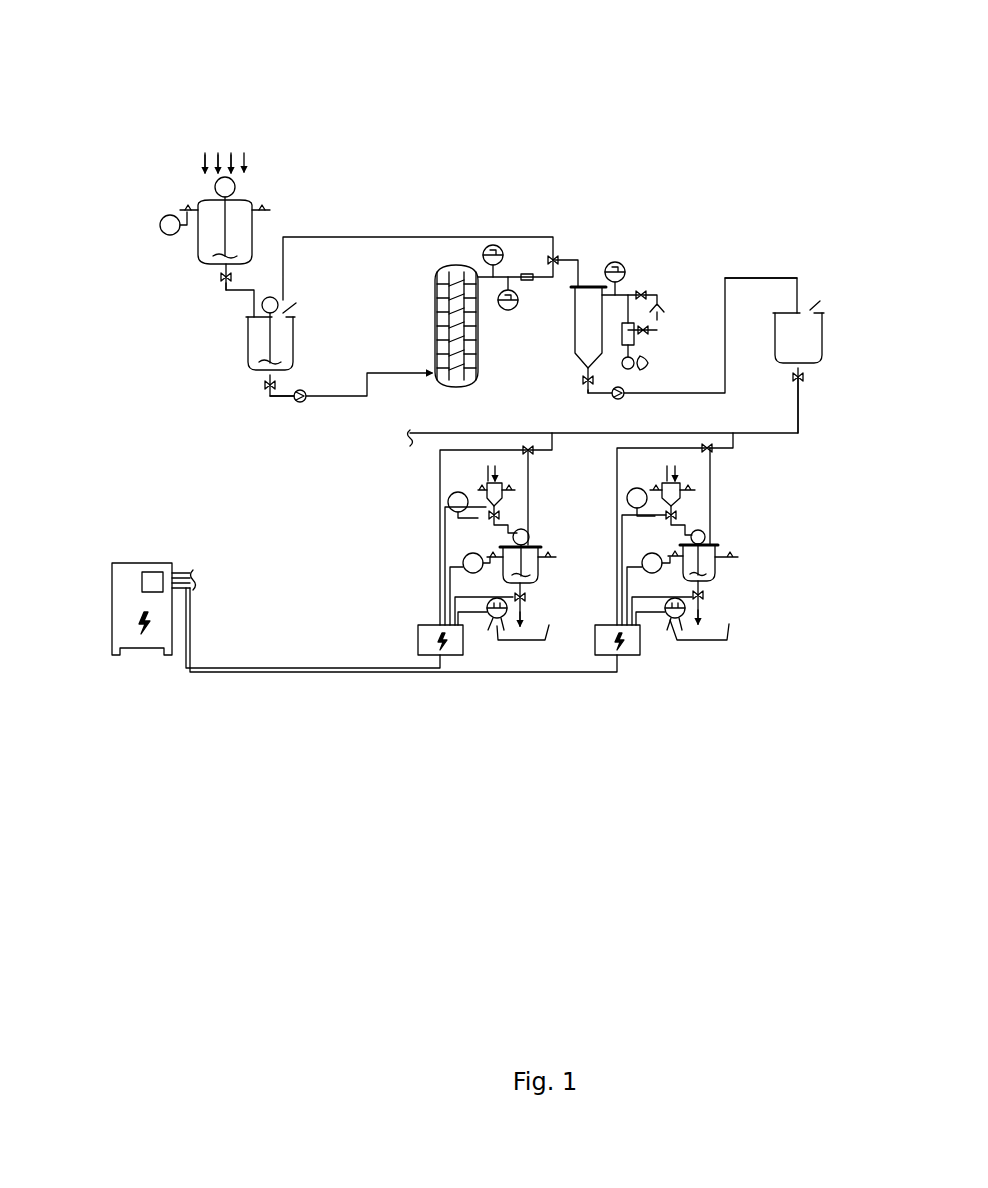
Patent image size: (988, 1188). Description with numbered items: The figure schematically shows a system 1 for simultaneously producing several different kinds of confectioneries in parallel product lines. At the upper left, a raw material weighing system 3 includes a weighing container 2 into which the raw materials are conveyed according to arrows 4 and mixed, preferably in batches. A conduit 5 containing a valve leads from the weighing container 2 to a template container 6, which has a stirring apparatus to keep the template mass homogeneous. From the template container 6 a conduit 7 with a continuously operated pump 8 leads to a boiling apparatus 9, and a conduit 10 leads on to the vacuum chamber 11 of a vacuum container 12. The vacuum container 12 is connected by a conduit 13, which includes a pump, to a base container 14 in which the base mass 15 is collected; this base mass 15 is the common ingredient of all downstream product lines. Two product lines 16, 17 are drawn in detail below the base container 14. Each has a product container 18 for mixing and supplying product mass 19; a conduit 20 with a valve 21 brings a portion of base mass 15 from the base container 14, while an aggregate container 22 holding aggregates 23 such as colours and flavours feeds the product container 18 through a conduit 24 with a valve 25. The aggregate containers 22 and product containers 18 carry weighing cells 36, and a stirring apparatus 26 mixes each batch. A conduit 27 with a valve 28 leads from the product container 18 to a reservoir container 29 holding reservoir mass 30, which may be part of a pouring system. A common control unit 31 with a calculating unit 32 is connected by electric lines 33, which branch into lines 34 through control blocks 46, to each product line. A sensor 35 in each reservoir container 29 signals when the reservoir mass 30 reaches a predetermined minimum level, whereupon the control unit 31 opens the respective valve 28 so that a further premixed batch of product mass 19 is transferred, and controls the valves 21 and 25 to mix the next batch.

The system 1 is at (712, 195).
The weighing container 2 is at (197, 242).
The raw material weighing system 3 is at (176, 203).
The arrows 4 is at (242, 158).
The conduit 5 is at (228, 285).
The template container 6 is at (246, 343).
The conduit 7 is at (285, 396).
The pump 8 is at (298, 400).
The boiling apparatus 9 is at (426, 298).
The conduit 10 is at (573, 260).
The vacuum chamber 11 is at (587, 293).
The vacuum container 12 is at (633, 259).
The conduit 13 is at (768, 278).
The base container 14 is at (823, 347).
The base mass 15 is at (805, 335).
The product line 16 is at (776, 542).
The product line 17 is at (544, 525).
The product container 18 is at (541, 577).
The product mass 19 is at (719, 558).
The conduit 20 is at (826, 407).
The valve 21 is at (552, 445).
The aggregate container 22 is at (484, 499).
The aggregates 23 is at (672, 487).
The conduit 24 is at (679, 535).
The valve 25 is at (666, 514).
The stirring apparatus 26 is at (712, 582).
The conduit 27 is at (701, 612).
The valve 28 is at (701, 596).
The reservoir container 29 is at (549, 637).
The reservoir mass 30 is at (515, 637).
The control unit 31 is at (157, 632).
The calculating unit 32 is at (130, 582).
The electric lines 33 is at (292, 669).
The lines 34 is at (658, 447).
The sensor 35 is at (492, 630).
The weighing cells 36 is at (460, 563).
The control blocks 46 is at (428, 648).